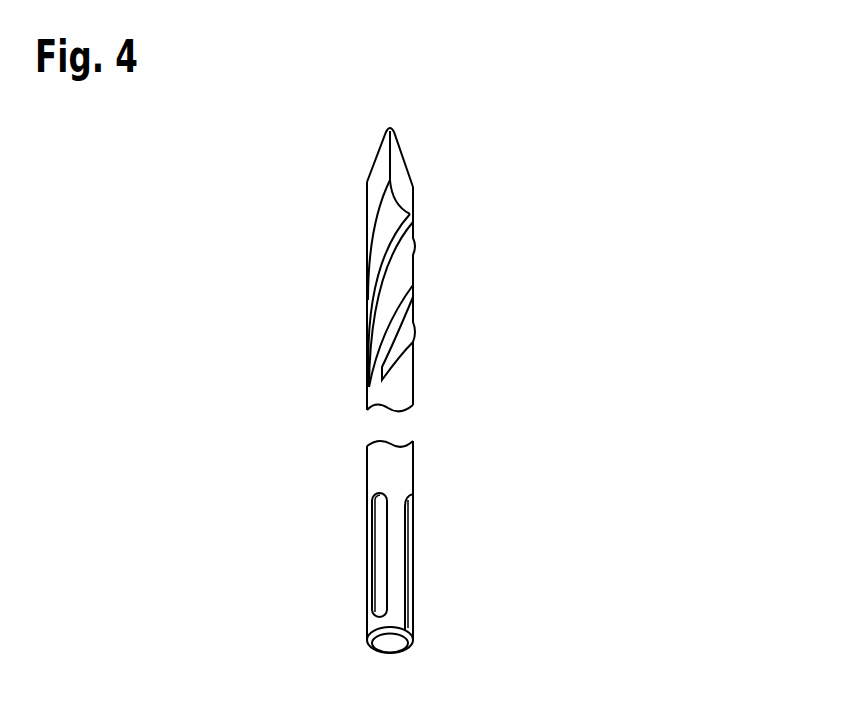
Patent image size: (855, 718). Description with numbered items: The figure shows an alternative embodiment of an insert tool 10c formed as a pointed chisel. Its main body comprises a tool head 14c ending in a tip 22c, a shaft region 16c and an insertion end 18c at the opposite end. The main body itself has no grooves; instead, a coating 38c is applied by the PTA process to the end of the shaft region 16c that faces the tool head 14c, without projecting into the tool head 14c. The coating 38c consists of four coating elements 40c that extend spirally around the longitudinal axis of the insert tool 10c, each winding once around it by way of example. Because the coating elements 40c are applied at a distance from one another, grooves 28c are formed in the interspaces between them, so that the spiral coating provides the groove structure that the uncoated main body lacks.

The insert tool 10c is at (684, 86).
The tool head 14c is at (276, 170).
The shaft region 16c is at (283, 263).
The insertion end 18c is at (316, 576).
The tip 22c is at (390, 127).
The grooves 28c is at (377, 312).
The coating 38c is at (462, 232).
The coating elements 40c is at (373, 350).